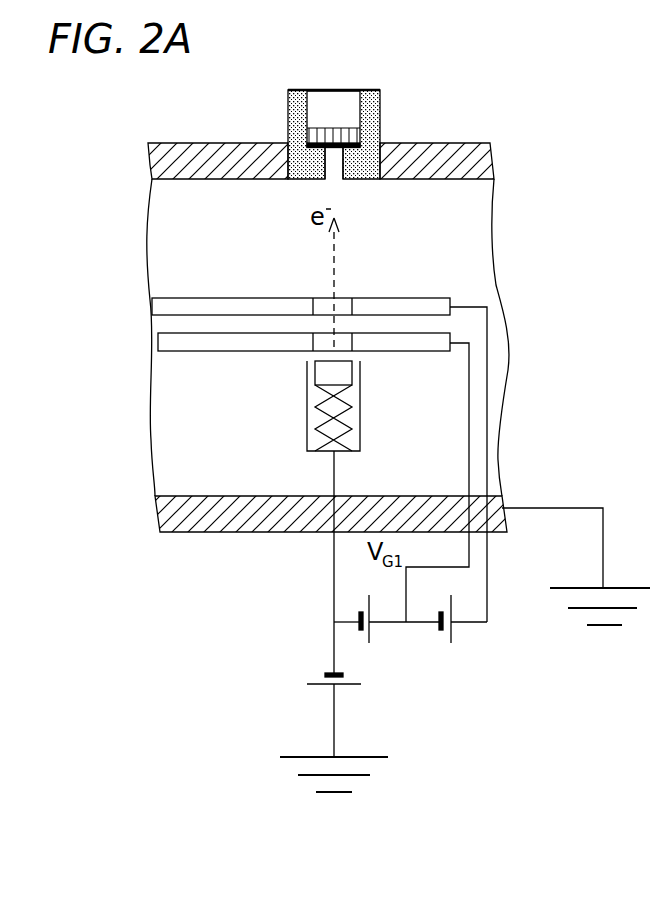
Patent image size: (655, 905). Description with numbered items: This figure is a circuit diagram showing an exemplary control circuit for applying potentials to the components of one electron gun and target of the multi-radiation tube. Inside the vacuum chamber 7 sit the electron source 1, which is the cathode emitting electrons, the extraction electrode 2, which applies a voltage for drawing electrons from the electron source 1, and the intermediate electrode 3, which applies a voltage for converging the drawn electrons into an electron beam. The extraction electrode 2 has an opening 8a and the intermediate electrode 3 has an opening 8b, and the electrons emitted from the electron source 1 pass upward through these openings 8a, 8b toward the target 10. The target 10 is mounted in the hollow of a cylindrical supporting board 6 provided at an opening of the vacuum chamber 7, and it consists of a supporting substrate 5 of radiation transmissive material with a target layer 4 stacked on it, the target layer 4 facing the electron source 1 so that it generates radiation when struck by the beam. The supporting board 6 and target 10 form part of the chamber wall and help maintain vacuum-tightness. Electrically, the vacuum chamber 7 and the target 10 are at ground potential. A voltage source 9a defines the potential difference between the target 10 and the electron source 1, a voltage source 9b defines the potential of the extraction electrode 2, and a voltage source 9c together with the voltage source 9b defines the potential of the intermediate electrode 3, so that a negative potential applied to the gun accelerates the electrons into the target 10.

The electron source 1 is at (352, 372).
The extraction electrode 2 is at (313, 438).
The intermediate electrode 3 is at (319, 432).
The target layer 4 is at (353, 152).
The supporting substrate 5 is at (334, 128).
The supporting board 6 is at (288, 120).
The vacuum chamber 7 is at (182, 180).
The opening 8a is at (327, 333).
The opening 8b is at (352, 298).
The voltage source 9a is at (320, 684).
The voltage source 9b is at (369, 643).
The voltage source 9c is at (451, 643).
The target 10 is at (313, 95).